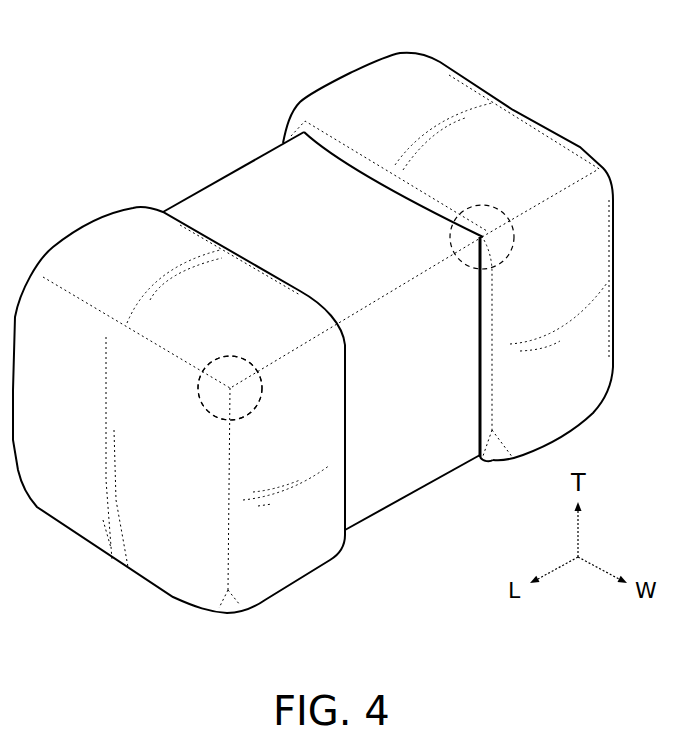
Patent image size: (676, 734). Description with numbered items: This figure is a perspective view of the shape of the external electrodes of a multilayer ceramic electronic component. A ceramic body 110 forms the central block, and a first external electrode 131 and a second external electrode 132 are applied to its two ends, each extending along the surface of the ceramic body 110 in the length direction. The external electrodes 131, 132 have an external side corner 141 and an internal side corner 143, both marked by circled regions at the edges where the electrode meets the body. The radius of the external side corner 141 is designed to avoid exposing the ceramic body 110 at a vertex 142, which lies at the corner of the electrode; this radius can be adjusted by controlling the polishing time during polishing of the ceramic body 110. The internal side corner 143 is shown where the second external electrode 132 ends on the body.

The ceramic body 110 is at (227, 173).
The first external electrode 131 is at (80, 238).
The second external electrode 132 is at (347, 85).
The external side corner 141 is at (252, 413).
The vertex 142 is at (230, 387).
The internal side corner 143 is at (492, 203).